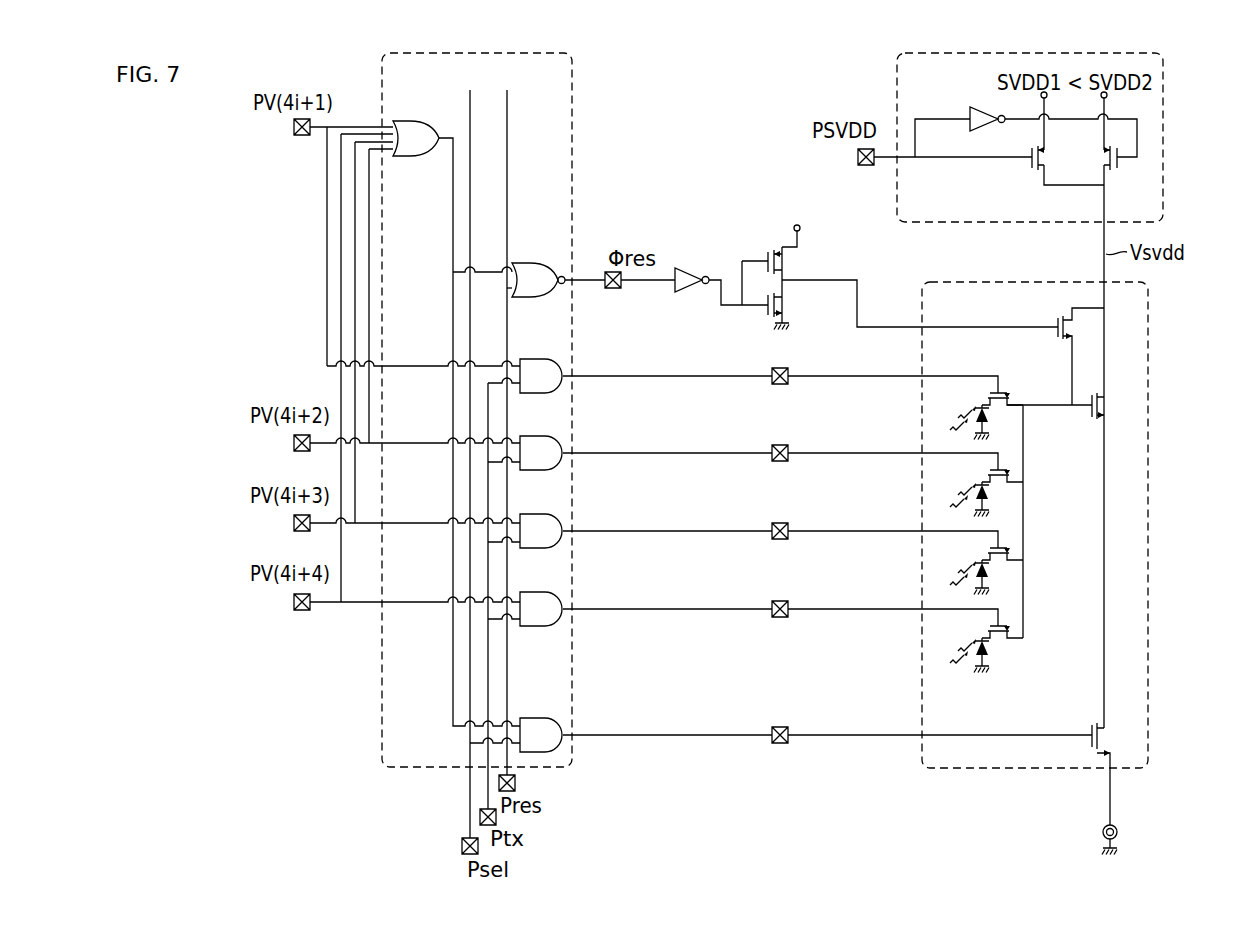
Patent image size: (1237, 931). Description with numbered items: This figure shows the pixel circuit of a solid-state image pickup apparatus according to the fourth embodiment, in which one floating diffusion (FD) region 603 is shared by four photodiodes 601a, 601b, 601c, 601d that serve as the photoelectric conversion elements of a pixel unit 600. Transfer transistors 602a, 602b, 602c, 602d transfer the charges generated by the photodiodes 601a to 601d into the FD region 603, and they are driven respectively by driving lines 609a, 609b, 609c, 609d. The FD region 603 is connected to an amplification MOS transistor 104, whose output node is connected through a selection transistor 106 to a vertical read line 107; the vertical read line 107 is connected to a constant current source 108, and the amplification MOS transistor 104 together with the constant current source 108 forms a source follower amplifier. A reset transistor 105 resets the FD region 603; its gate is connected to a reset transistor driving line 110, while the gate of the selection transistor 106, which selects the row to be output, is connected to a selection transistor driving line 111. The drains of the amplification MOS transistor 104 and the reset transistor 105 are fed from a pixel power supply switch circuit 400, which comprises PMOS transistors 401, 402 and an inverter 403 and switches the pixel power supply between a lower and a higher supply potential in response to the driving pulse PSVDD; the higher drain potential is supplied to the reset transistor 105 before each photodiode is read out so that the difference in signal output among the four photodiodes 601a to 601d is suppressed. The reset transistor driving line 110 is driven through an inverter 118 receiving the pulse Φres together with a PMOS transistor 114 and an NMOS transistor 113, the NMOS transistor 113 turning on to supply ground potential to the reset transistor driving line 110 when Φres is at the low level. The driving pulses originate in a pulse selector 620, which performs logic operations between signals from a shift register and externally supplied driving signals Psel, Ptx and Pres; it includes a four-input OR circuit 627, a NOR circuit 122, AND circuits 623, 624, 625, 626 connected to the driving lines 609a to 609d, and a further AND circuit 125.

The pulse selector 620 is at (575, 137).
The OR circuit 627 is at (414, 122).
The NOR circuit 122 is at (534, 263).
The AND circuit 623 is at (545, 359).
The AND circuit 624 is at (545, 436).
The AND circuit 625 is at (545, 514).
The AND circuit 626 is at (545, 592).
The AND circuit 125 is at (545, 718).
The inverter 118 is at (676, 286).
The PMOS transistor 114 is at (785, 263).
The NMOS transistor 113 is at (785, 303).
The reset transistor driving line 110 is at (883, 326).
The pixel power supply switch circuit 400 is at (1165, 148).
The inverter 403 is at (972, 112).
The PMOS transistor 401 is at (1036, 172).
The PMOS transistor 402 is at (1113, 172).
The pixel unit 600 is at (993, 282).
The reset transistor 105 is at (1056, 318).
The FD region 603 is at (1042, 405).
The amplification MOS transistor 104 is at (1100, 402).
The driving line 609a is at (896, 376).
The driving line 609b is at (896, 453).
The driving line 609c is at (896, 531).
The driving line 609d is at (896, 609).
The photodiode 601a is at (975, 408).
The photodiode 601b is at (975, 485).
The photodiode 601c is at (975, 563).
The photodiode 601d is at (975, 641).
The transfer transistor 602a is at (998, 408).
The transfer transistor 602b is at (998, 485).
The transfer transistor 602c is at (998, 563).
The transfer transistor 602d is at (998, 641).
The selection transistor driving line 111 is at (886, 735).
The selection transistor 106 is at (1090, 726).
The vertical read line 107 is at (1108, 795).
The constant current source 108 is at (1102, 832).